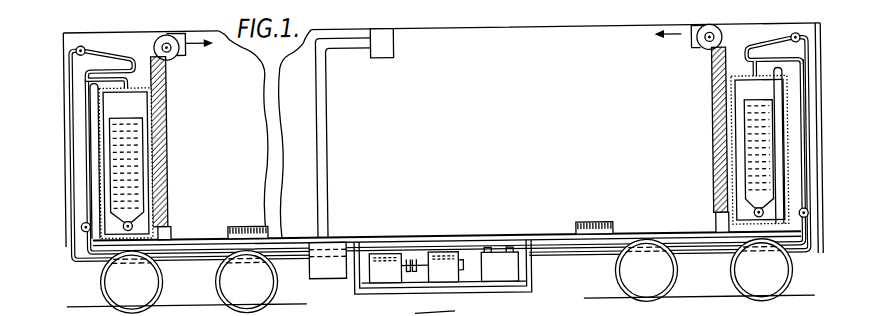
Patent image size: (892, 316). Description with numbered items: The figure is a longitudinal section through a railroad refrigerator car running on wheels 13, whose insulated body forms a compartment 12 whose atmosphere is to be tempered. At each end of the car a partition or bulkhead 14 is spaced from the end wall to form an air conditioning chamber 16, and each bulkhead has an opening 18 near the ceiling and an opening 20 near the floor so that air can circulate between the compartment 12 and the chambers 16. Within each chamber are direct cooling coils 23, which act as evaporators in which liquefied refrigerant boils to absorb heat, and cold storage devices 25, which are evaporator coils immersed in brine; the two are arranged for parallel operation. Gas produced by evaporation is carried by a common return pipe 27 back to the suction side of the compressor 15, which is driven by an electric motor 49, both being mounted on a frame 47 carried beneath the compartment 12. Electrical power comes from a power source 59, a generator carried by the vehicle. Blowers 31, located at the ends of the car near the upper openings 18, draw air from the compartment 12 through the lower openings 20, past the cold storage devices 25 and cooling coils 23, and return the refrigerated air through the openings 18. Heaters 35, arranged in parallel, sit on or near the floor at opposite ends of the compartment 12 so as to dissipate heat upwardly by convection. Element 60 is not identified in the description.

The air conditioning chambers 16 is at (65, 35).
The openings 18 is at (149, 28).
The direct cooling coils 23 is at (100, 53).
The blowers 31 is at (171, 54).
The partitions or bulkheads 14 is at (167, 121).
The control valve 60 is at (395, 43).
The compartment 12 is at (445, 138).
The cold storage devices 25 is at (439, 152).
The openings 20 is at (172, 224).
The heaters 35 is at (243, 224).
The common return pipe 27 is at (78, 252).
The wheels 13 is at (446, 275).
The compressor 15 is at (398, 268).
The electric motor 49 is at (445, 267).
The power source 59 is at (499, 264).
The frame 47 is at (530, 271).